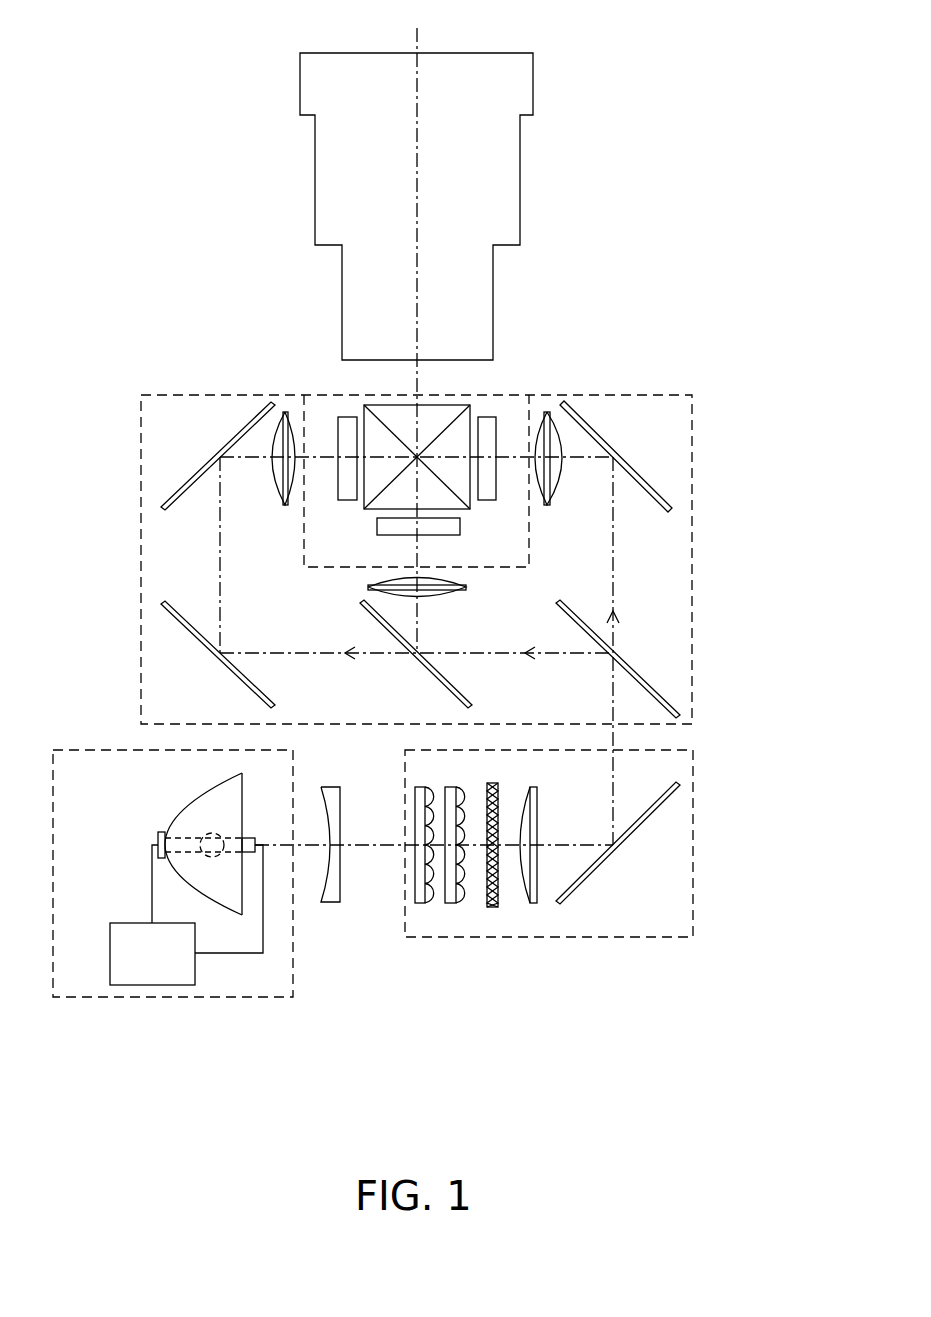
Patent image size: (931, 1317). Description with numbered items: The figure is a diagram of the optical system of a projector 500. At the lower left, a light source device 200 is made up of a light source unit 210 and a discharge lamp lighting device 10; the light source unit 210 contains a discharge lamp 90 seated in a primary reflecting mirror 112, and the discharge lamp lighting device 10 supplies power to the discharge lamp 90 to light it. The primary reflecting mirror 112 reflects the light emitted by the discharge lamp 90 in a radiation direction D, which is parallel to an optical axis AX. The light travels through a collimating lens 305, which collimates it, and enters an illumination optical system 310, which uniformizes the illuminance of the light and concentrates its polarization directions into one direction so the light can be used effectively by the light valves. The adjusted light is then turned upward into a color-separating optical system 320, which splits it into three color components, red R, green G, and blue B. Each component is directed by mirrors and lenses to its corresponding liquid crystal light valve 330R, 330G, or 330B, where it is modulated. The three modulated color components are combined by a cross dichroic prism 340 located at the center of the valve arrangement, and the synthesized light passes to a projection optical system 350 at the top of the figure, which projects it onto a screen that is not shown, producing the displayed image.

The projector 500 is at (613, 43).
The projection optical system 350 is at (520, 210).
The cross dichroic prism 340 is at (397, 405).
The liquid crystal light valve 330R is at (490, 417).
The liquid crystal light valve 330G is at (445, 537).
The liquid crystal light valve 330B is at (350, 500).
The color-separating optical system 320 is at (693, 700).
The illumination optical system 310 is at (693, 897).
The collimating lens 305 is at (335, 903).
The light source device 200 is at (137, 998).
The light source unit 210 is at (171, 839).
The primary reflecting mirror 112 is at (184, 802).
The discharge lamp 90 is at (244, 840).
The discharge lamp lighting device 10 is at (110, 952).
The optical axis AX is at (378, 848).
The radiation direction D is at (267, 1022).
The red R is at (614, 572).
The green G is at (417, 617).
The blue B is at (216, 584).